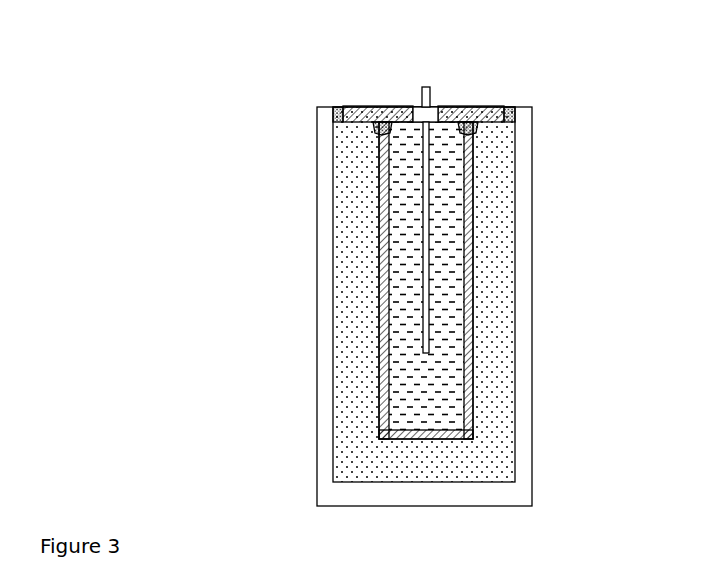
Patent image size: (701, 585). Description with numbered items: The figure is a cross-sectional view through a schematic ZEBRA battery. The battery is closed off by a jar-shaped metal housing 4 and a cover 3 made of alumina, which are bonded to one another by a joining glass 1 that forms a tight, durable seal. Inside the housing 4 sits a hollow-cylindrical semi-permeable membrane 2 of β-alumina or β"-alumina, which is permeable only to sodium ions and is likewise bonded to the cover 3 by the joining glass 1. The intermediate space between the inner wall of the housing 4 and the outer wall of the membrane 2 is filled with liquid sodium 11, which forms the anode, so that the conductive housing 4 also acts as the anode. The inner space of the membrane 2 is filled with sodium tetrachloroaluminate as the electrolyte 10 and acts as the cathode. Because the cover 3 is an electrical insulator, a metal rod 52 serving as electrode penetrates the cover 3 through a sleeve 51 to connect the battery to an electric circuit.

The joining glass 1 is at (426, 97).
The semi-permeable membrane 2 is at (495, 280).
The cover 3 is at (435, 75).
The housing 4 is at (381, 312).
The electrolyte 10 is at (506, 292).
The liquid sodium 11 is at (476, 309).
The sleeve 51 is at (390, 89).
The metal rod 52 is at (443, 185).